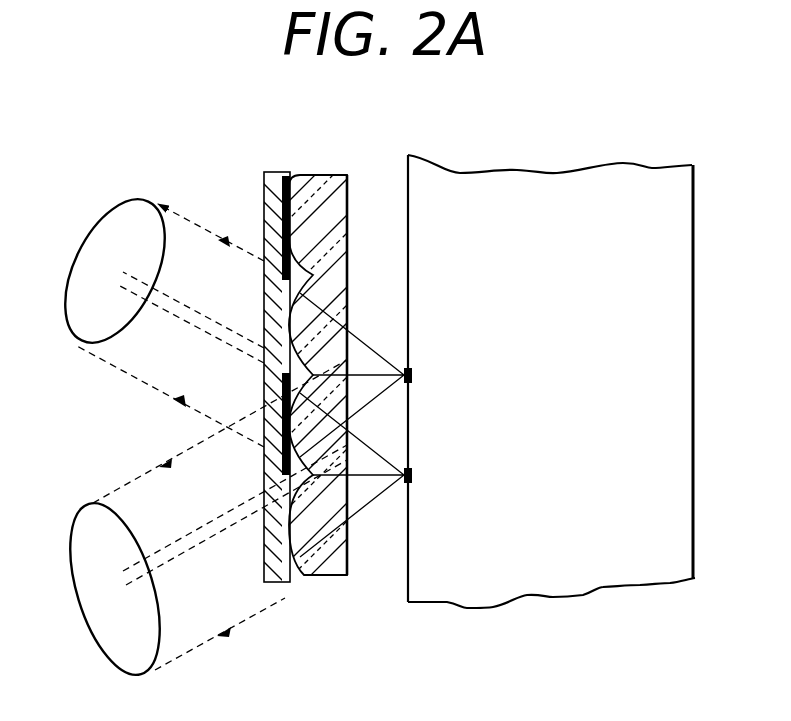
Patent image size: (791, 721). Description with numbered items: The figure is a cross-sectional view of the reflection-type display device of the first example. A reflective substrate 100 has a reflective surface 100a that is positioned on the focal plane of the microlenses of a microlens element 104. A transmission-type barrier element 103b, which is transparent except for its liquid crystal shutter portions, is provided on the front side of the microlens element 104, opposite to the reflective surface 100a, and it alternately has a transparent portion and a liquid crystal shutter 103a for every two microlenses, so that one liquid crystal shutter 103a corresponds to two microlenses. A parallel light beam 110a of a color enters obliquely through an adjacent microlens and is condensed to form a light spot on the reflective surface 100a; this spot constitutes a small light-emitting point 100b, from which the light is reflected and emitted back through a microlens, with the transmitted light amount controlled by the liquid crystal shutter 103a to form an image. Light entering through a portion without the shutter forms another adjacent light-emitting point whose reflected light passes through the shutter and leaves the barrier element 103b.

The reflective substrate 100 is at (538, 182).
The reflective surface 100a is at (408, 580).
The small light-emitting point 100b is at (412, 375).
The liquid crystal shutter 103a is at (288, 180).
The transmission-type barrier element 103b is at (263, 192).
The microlens element 104 is at (330, 178).
The parallel light beam 110a is at (190, 635).